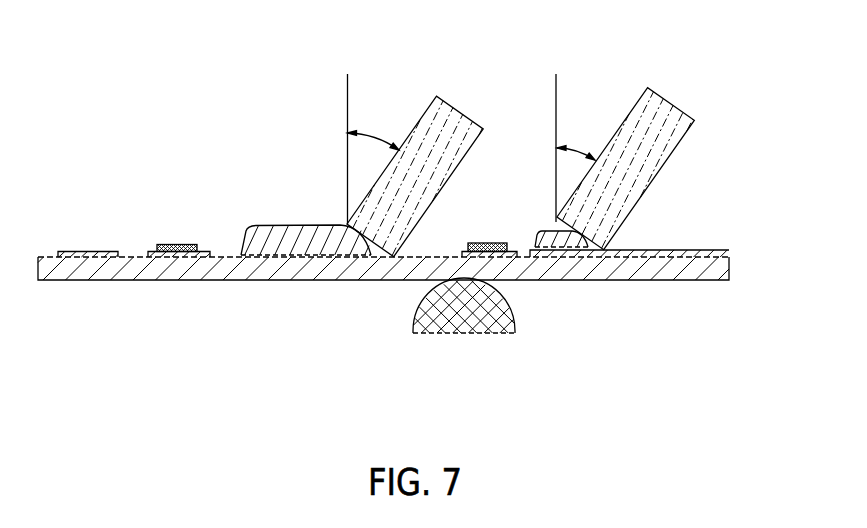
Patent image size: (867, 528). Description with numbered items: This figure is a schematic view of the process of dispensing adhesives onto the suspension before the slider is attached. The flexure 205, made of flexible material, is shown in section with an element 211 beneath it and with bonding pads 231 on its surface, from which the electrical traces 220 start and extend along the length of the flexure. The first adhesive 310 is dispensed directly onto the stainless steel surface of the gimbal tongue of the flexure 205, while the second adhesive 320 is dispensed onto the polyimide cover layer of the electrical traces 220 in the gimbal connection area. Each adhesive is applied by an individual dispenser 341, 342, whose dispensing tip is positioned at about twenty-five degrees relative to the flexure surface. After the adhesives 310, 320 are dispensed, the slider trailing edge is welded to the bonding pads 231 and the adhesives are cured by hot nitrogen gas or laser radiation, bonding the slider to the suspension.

The flexure 205 is at (740, 267).
The bottom convex structure 211 is at (490, 322).
The electrical traces 220 is at (653, 252).
The bonding pads 231 is at (78, 255).
The first adhesive 310 is at (300, 235).
The second adhesive 320 is at (550, 242).
The dispenser 341 is at (447, 115).
The dispenser 342 is at (653, 110).